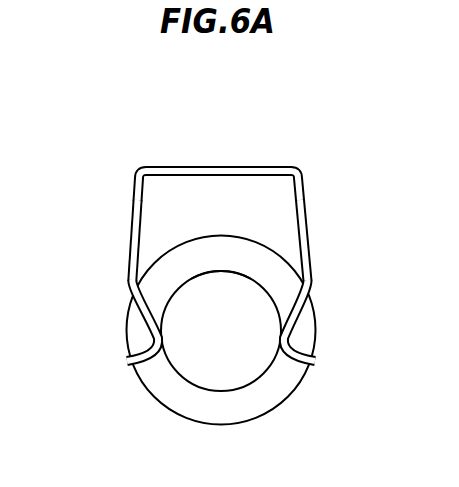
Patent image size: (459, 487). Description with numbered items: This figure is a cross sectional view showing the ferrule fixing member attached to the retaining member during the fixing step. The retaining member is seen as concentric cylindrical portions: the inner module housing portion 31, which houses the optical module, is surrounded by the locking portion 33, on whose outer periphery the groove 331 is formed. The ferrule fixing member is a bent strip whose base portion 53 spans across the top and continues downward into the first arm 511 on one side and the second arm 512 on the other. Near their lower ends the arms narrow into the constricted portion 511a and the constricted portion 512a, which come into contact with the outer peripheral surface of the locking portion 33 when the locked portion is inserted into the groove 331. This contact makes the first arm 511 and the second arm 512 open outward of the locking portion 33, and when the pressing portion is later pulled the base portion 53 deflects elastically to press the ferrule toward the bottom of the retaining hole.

The base portion 53 is at (218, 166).
The first arm 511 is at (130, 223).
The second arm 512 is at (311, 222).
The constricted portion of the first arm 511a is at (157, 336).
The constricted portion of the second arm 512a is at (286, 336).
The module housing portion 31 is at (187, 380).
The locking portion 33 is at (255, 380).
The groove 331 is at (233, 270).